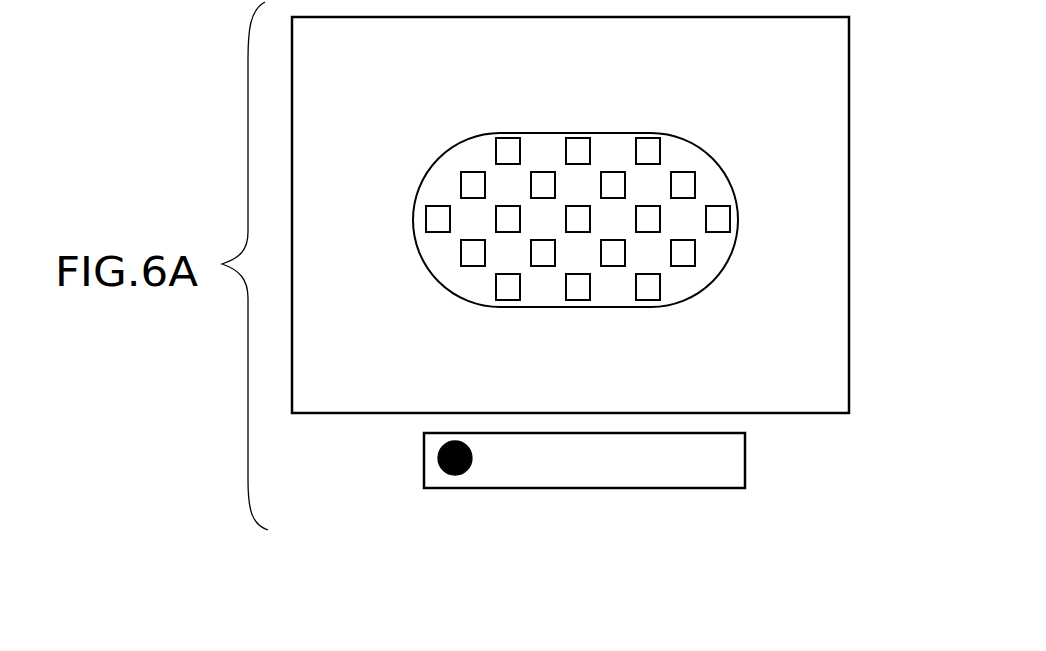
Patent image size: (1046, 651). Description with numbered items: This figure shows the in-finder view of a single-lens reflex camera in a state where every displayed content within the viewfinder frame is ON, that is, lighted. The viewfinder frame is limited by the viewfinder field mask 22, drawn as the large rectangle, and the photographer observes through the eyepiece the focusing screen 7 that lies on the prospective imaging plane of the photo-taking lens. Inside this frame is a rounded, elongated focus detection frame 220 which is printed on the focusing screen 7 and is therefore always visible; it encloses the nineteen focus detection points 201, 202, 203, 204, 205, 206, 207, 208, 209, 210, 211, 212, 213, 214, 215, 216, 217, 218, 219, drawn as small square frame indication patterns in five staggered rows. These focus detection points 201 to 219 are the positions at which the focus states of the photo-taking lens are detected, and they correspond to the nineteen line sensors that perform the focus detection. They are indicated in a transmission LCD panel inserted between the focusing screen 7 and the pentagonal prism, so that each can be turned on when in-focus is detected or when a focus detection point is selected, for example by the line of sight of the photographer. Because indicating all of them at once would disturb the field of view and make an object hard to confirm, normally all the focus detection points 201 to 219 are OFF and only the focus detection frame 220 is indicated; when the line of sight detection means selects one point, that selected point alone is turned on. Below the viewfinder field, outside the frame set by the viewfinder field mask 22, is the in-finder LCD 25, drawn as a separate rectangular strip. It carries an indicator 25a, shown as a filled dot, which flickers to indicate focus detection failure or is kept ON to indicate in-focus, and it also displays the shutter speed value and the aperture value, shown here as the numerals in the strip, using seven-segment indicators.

The focusing screen 7 is at (601, 215).
The viewfinder field mask 22 is at (849, 140).
The focus detection point 201 is at (507, 152).
The focus detection point 202 is at (577, 152).
The focus detection point 203 is at (647, 152).
The focus detection point 204 is at (472, 183).
The focus detection point 205 is at (537, 183).
The focus detection point 206 is at (610, 182).
The focus detection point 207 is at (682, 183).
The focus detection point 208 is at (436, 222).
The focus detection point 209 is at (505, 219).
The focus detection point 210 is at (573, 218).
The focus detection point 211 is at (648, 220).
The focus detection point 212 is at (718, 220).
The focus detection point 213 is at (470, 255).
The focus detection point 214 is at (540, 255).
The focus detection point 215 is at (612, 255).
The focus detection point 216 is at (682, 258).
The focus detection point 217 is at (505, 286).
The focus detection point 218 is at (577, 286).
The focus detection point 219 is at (647, 286).
The focus detection frame 220 is at (425, 268).
The in-finder LCD 25 is at (584, 487).
The indicator 25a is at (455, 475).